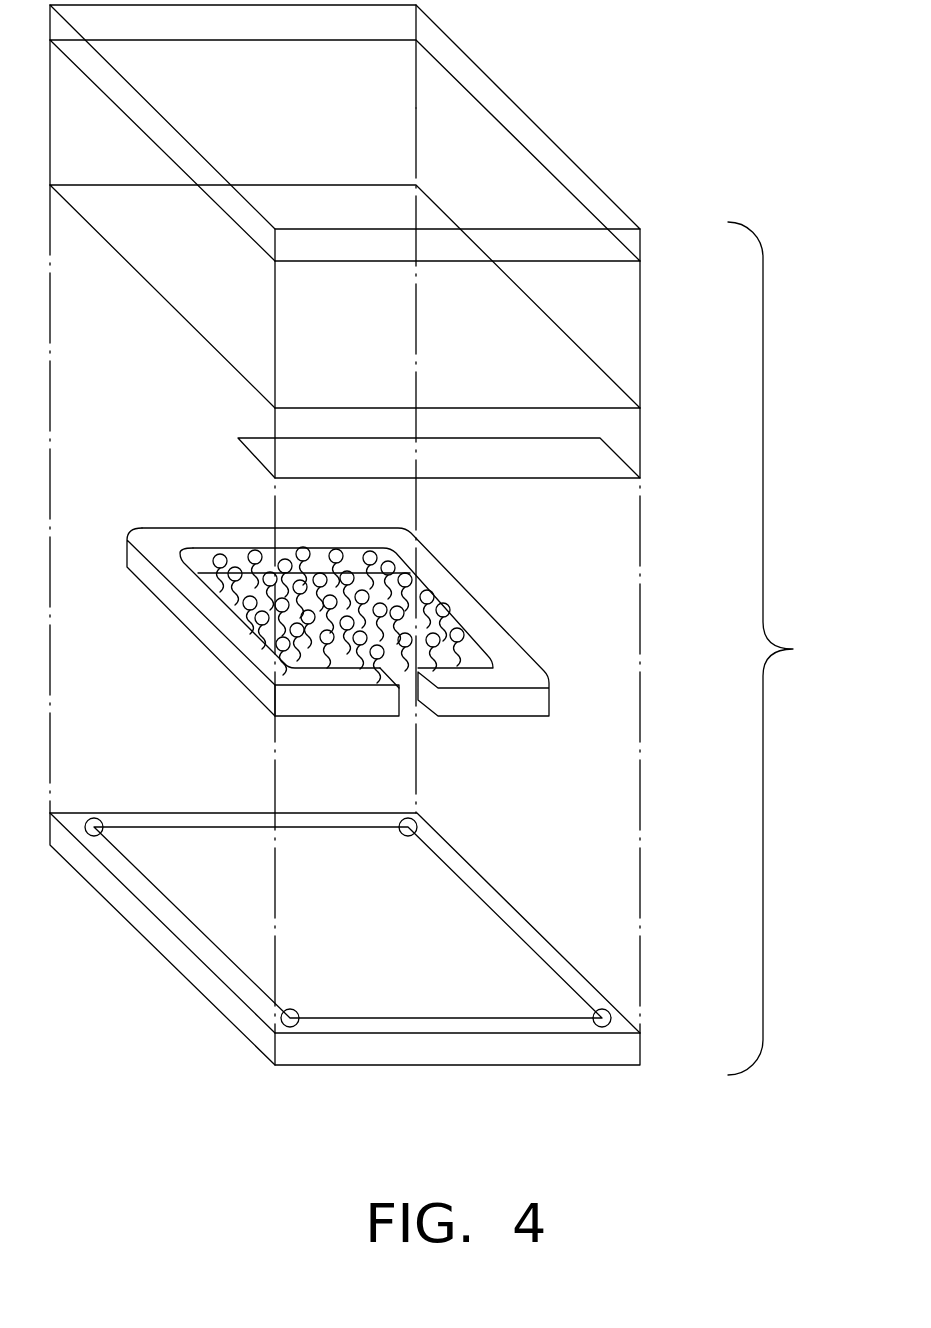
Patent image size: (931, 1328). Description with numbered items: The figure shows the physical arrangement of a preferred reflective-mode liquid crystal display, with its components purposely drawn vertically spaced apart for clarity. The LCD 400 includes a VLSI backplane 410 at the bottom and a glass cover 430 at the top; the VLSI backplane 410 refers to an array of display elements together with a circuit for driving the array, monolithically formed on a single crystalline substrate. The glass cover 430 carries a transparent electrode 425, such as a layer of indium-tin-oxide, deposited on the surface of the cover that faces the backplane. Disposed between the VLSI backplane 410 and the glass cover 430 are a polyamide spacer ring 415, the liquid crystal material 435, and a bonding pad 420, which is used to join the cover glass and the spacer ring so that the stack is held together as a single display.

The LCD 400 is at (450, 591).
The VLSI backplane 410 is at (610, 1050).
The polyamide spacer ring 415 is at (512, 704).
The bonding pad 420 is at (595, 465).
The transparent electrode 425 is at (582, 392).
The glass cover 430 is at (634, 241).
The liquid crystal material 435 is at (243, 590).